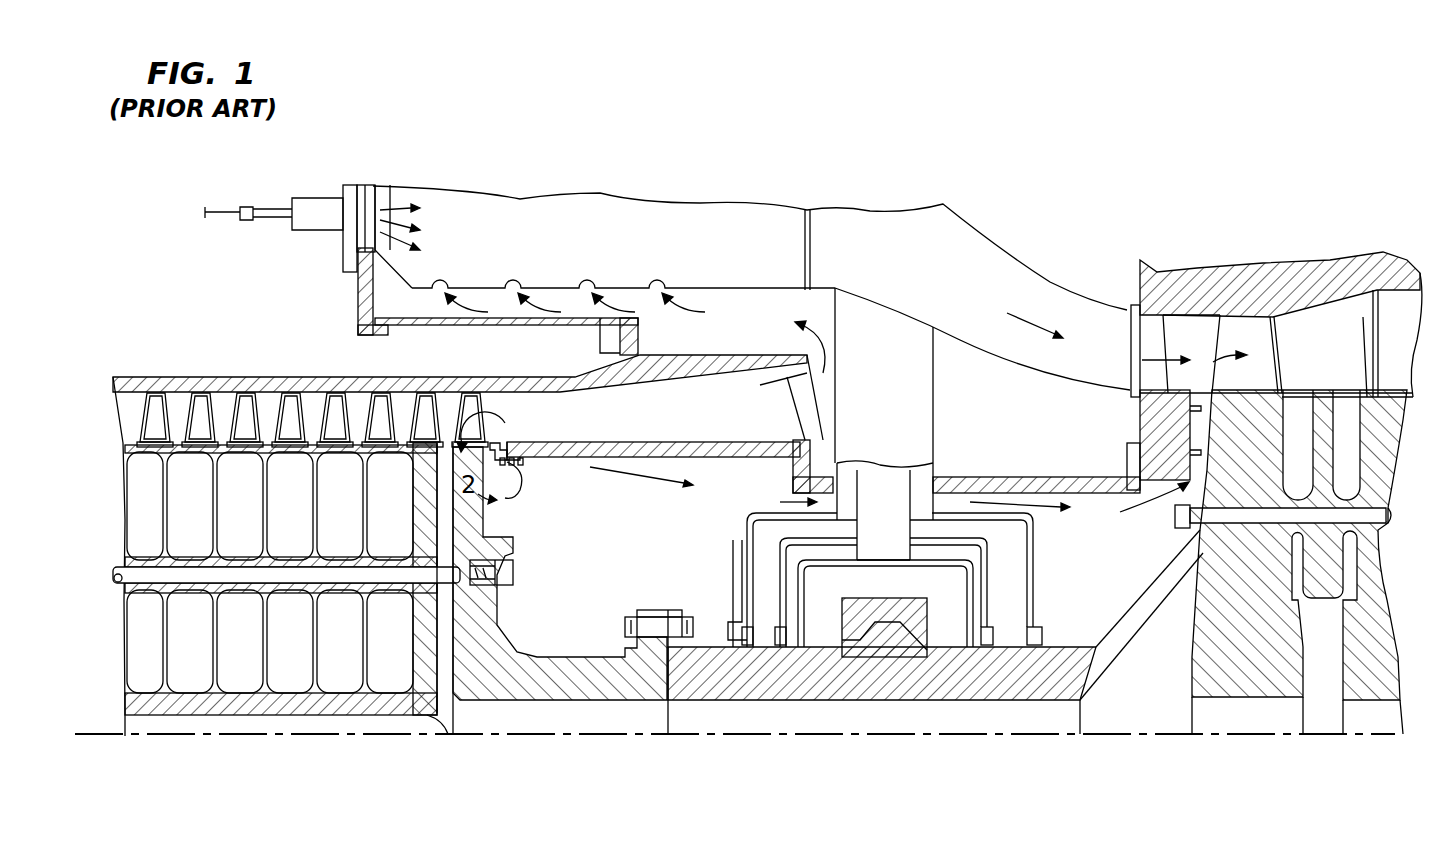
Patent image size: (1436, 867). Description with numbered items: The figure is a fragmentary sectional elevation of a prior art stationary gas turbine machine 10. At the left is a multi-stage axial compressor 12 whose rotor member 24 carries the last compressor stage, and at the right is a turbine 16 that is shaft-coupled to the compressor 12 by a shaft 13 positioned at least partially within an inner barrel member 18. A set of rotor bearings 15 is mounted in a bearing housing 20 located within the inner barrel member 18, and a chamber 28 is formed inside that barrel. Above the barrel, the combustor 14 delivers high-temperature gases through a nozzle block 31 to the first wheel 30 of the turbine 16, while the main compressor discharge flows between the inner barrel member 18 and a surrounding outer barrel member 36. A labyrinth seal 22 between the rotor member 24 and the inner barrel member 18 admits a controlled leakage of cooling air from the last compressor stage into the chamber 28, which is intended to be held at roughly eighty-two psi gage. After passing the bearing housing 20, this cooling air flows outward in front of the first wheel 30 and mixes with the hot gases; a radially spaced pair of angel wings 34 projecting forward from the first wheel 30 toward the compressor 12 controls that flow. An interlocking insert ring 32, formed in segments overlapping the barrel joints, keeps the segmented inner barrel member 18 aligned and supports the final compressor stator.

The gas turbine machine 10 is at (120, 509).
The multi-stage axial compressor 12 is at (160, 484).
The shaft 13 is at (1057, 645).
The combustor 14 is at (467, 325).
The rotor bearings 15 is at (938, 640).
The turbine 16 is at (1340, 562).
The inner barrel member 18 is at (657, 442).
The bearing housing 20 is at (736, 550).
The labyrinth seal 22 is at (528, 461).
The rotor member 24 is at (512, 486).
The chamber 28 is at (680, 531).
The first wheel 30 is at (1260, 478).
The nozzle block 31 is at (1163, 327).
The interlocking insert ring 32 is at (497, 446).
The angel wings 34 is at (1203, 453).
The outer barrel member 36 is at (567, 390).